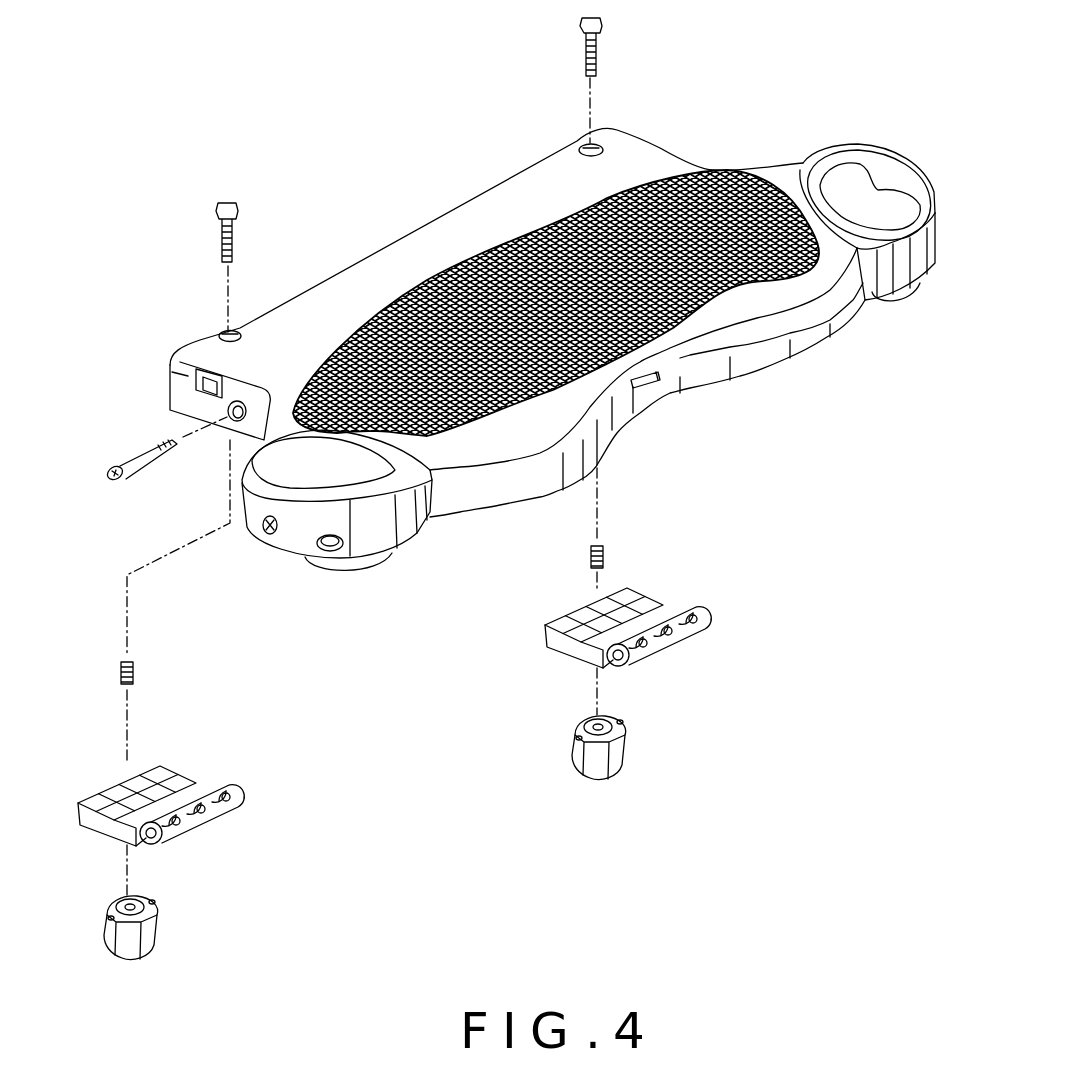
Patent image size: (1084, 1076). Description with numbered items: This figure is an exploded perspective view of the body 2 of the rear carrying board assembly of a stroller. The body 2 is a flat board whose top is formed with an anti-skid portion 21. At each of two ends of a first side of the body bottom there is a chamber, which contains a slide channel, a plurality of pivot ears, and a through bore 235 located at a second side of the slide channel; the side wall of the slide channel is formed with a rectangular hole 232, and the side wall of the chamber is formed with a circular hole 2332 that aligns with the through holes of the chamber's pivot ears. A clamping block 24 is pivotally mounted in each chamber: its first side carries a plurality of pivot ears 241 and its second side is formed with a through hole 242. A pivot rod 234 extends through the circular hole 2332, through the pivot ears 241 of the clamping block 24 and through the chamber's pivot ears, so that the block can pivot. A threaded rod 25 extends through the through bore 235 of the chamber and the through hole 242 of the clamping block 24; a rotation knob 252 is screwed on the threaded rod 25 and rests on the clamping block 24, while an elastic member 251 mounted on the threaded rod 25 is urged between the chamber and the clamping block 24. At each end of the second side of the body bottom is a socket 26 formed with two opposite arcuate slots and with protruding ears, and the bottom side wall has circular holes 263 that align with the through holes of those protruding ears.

The body 2 is at (433, 247).
The anti-skid portion 21 is at (737, 197).
The through bore 235 is at (216, 334).
The rectangular hole 232 is at (200, 388).
The circular hole 2332 is at (228, 408).
The pivot rod 234 is at (147, 460).
The socket 26 is at (357, 563).
The circular hole 263 is at (267, 537).
The threaded rod 25 is at (597, 52).
The elastic member 251 is at (606, 554).
The clamping block 24 is at (631, 602).
The through hole 242 is at (590, 606).
The pivot ears 241 is at (693, 617).
The rotation knob 252 is at (615, 740).